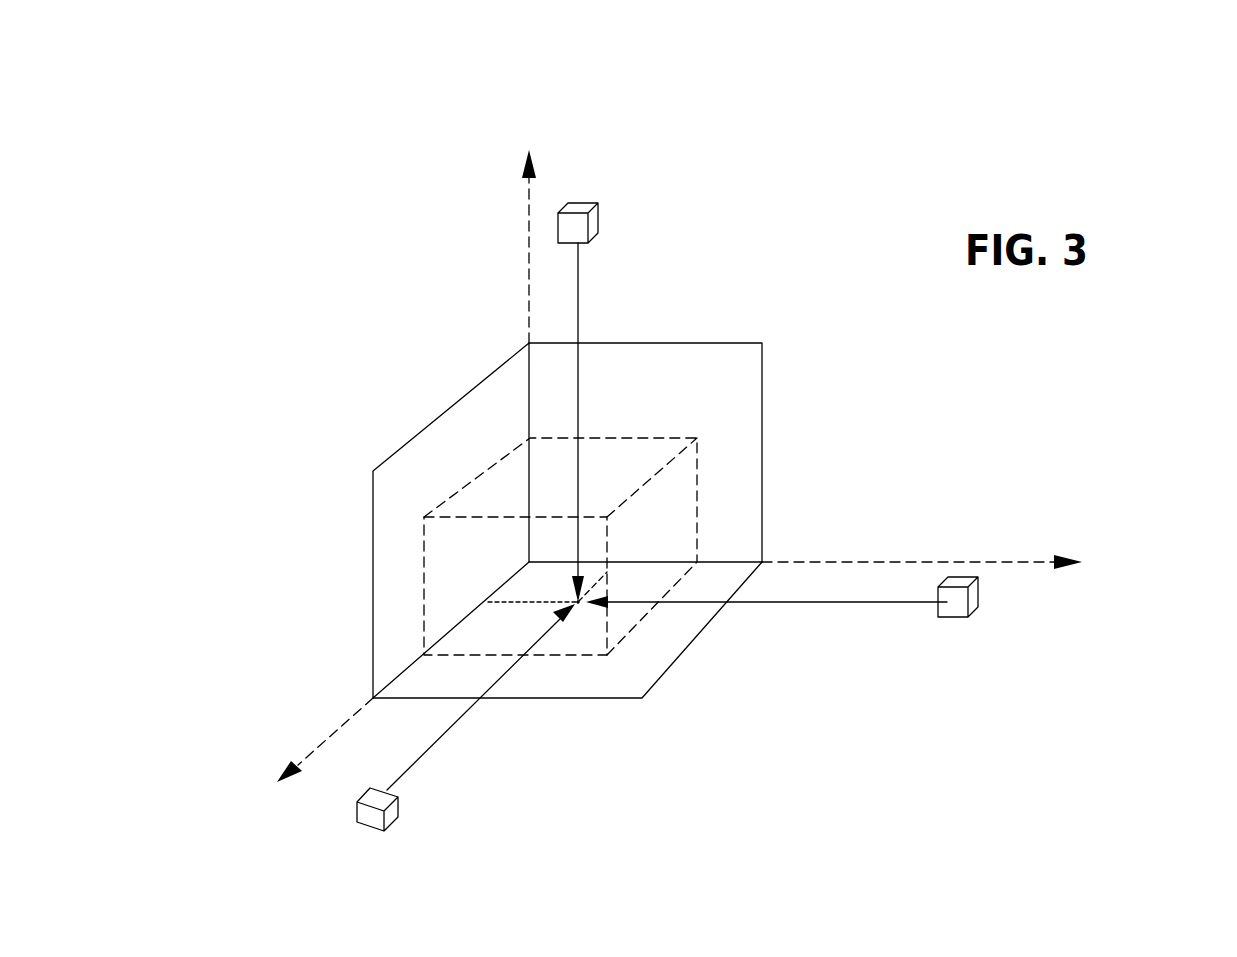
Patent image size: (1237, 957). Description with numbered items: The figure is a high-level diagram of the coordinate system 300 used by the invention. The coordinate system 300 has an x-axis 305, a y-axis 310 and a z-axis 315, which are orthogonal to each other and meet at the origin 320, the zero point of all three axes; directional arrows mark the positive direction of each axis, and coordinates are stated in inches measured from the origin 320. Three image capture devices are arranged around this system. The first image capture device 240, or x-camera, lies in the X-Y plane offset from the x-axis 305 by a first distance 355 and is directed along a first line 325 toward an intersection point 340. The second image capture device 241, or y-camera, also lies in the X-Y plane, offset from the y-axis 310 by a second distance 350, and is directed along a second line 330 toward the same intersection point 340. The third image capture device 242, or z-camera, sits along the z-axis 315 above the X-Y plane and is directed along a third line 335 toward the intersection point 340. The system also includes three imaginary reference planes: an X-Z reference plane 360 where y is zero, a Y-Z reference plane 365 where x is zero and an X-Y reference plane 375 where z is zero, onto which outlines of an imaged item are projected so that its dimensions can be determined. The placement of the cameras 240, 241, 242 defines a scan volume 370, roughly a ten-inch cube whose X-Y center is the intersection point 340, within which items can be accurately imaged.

The coordinate system 300 is at (315, 73).
The x-axis 305 is at (330, 733).
The y-axis 310 is at (905, 562).
The z-axis 315 is at (529, 267).
The origin 320 is at (578, 602).
The first line 325 is at (433, 748).
The second line 330 is at (862, 602).
The third line 335 is at (578, 305).
The intersection point 340 is at (578, 602).
The second distance 350 is at (615, 567).
The first distance 355 is at (517, 602).
The X-Z reference plane 360 is at (435, 418).
The Y-Z reference plane 365 is at (763, 393).
The scan volume 370 is at (662, 438).
The X-Y reference plane 375 is at (660, 665).
The first image capture device 240 is at (388, 832).
The second image capture device 241 is at (973, 608).
The third image capture device 242 is at (595, 220).